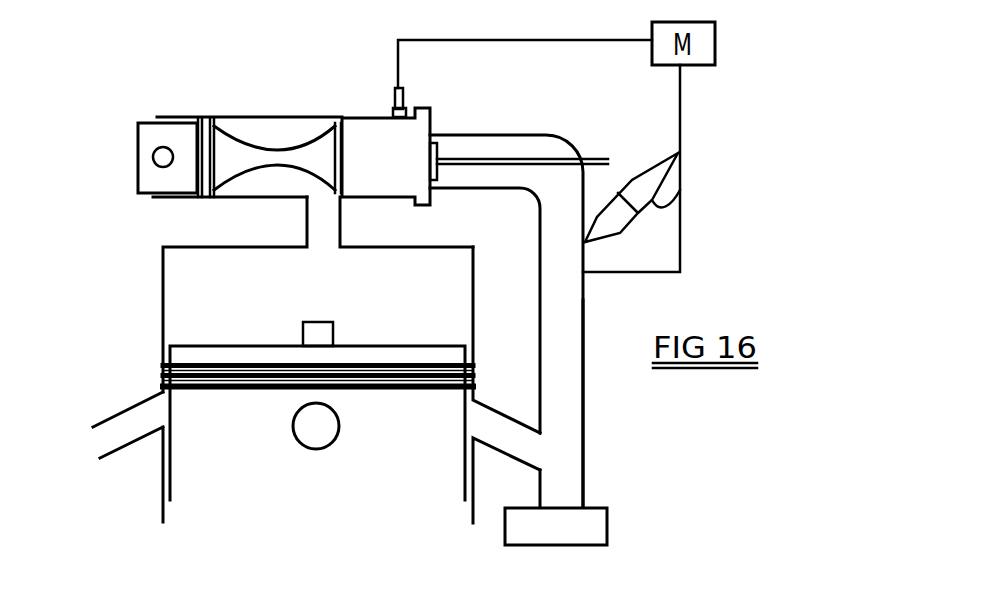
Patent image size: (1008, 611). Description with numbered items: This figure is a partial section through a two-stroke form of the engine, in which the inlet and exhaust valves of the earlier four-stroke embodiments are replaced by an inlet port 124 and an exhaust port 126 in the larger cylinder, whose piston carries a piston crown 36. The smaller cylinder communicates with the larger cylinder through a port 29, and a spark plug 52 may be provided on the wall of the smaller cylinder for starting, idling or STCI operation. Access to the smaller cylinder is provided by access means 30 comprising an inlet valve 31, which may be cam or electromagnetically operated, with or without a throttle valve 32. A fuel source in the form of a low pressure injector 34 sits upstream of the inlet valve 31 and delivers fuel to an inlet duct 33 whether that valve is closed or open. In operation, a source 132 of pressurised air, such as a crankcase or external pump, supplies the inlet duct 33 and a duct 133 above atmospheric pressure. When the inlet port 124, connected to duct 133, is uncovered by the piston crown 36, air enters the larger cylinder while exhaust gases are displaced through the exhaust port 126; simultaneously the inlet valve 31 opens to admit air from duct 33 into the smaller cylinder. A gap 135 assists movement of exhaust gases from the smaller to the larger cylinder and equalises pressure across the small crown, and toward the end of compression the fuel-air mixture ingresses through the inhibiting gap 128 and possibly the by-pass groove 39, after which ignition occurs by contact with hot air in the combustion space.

The spark plug 52 is at (396, 108).
The inhibiting gap 128 is at (338, 120).
The by-pass groove 39 is at (425, 108).
The gap 135 is at (350, 195).
The port 29 is at (323, 220).
The inlet valve 31 is at (493, 157).
The throttle valve 32 is at (550, 266).
The low pressure injector 34 is at (680, 190).
The access means 30 is at (634, 251).
The piston crown 36 is at (255, 357).
The exhaust port 126 is at (137, 413).
The inlet port 124 is at (473, 425).
The duct 133 is at (513, 438).
The inlet duct 33 is at (585, 413).
The source of pressurised air 132 is at (597, 527).